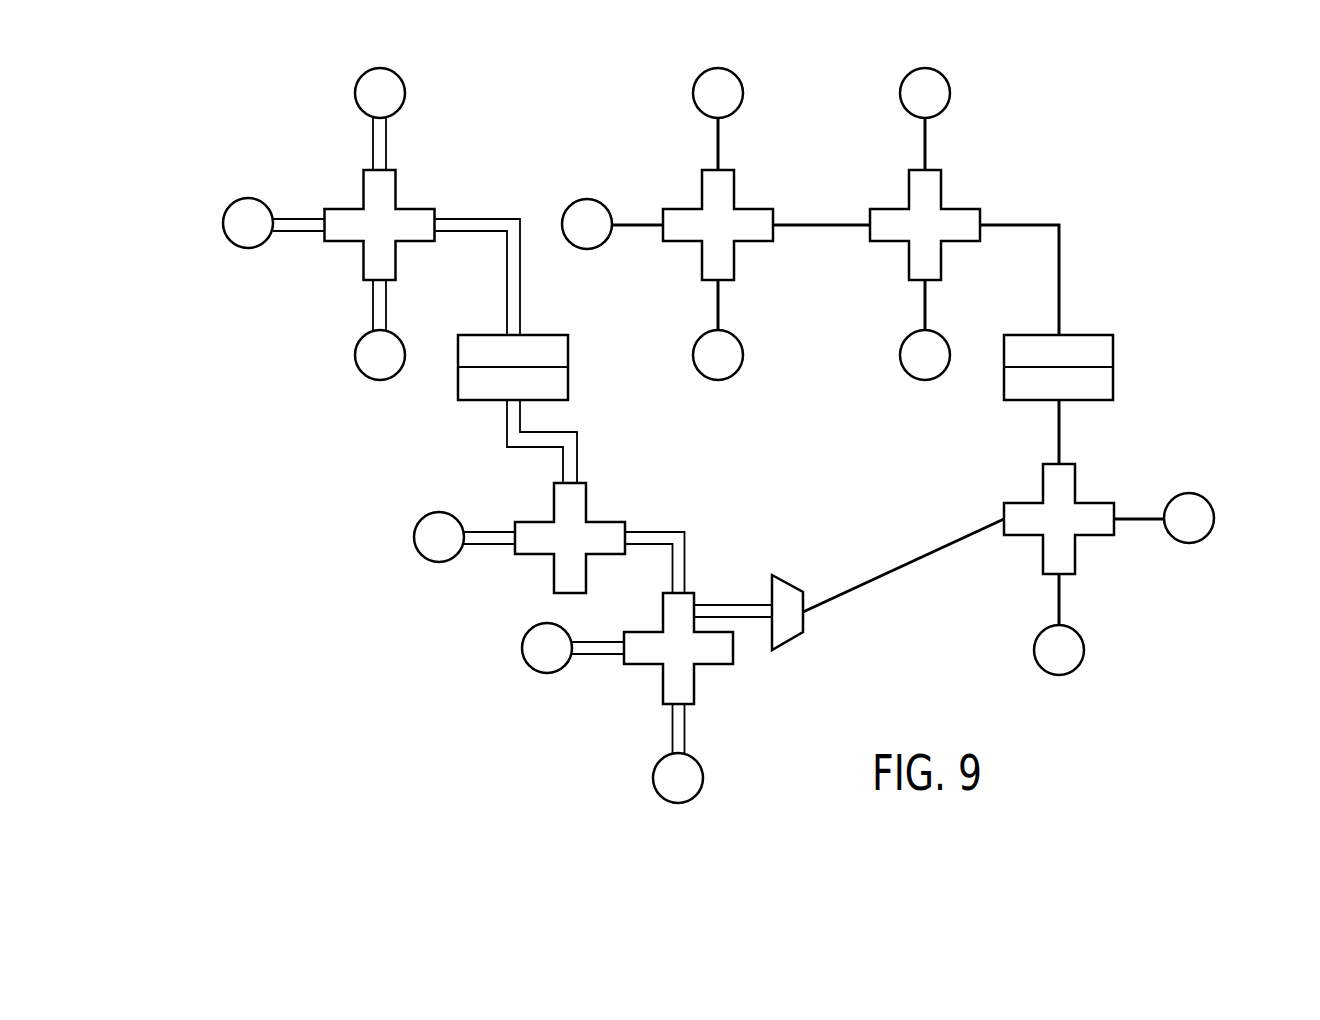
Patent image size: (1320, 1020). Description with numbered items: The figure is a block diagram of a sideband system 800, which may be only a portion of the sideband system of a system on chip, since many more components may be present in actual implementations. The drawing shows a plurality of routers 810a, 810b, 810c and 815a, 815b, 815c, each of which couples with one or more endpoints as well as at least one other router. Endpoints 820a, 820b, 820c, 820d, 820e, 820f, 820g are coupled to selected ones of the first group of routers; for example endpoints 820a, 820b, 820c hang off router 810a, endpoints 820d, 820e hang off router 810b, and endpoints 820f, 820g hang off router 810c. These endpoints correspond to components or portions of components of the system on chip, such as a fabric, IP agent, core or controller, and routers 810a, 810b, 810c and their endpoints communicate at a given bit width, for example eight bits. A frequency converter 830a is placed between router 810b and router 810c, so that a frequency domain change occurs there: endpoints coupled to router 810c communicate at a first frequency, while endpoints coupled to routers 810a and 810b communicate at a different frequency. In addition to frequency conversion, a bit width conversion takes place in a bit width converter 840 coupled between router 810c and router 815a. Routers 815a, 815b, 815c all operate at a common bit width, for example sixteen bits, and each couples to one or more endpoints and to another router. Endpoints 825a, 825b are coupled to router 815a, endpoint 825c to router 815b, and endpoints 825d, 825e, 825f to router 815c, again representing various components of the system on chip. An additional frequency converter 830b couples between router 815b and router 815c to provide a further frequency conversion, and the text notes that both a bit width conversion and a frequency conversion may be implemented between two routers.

The sideband system 800 is at (160, 116).
The router 810a is at (740, 210).
The router 810b is at (948, 210).
The router 810c is at (1086, 504).
The router 815a is at (712, 664).
The router 815b is at (605, 523).
The router 815c is at (338, 211).
The endpoint 820a is at (701, 78).
The endpoint 820b is at (571, 206).
The endpoint 820c is at (701, 373).
The endpoint 820d is at (904, 373).
The endpoint 820e is at (944, 80).
The endpoint 820f is at (1208, 503).
The endpoint 820g is at (1077, 668).
The endpoint 825a is at (675, 802).
The endpoint 825b is at (525, 663).
The endpoint 825c is at (420, 553).
The endpoint 825d is at (362, 373).
The endpoint 825e is at (398, 80).
The endpoint 825f is at (228, 210).
The frequency converter 830a is at (1113, 348).
The frequency converter 830b is at (568, 348).
The bit width converter 840 is at (790, 583).